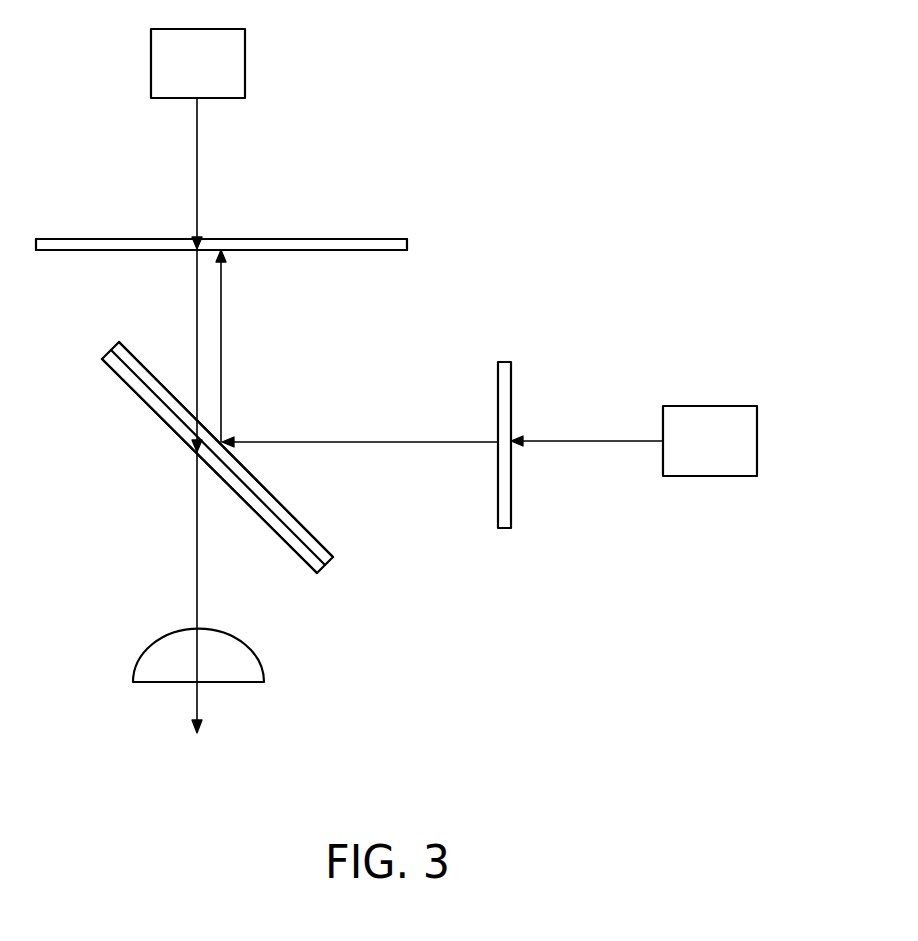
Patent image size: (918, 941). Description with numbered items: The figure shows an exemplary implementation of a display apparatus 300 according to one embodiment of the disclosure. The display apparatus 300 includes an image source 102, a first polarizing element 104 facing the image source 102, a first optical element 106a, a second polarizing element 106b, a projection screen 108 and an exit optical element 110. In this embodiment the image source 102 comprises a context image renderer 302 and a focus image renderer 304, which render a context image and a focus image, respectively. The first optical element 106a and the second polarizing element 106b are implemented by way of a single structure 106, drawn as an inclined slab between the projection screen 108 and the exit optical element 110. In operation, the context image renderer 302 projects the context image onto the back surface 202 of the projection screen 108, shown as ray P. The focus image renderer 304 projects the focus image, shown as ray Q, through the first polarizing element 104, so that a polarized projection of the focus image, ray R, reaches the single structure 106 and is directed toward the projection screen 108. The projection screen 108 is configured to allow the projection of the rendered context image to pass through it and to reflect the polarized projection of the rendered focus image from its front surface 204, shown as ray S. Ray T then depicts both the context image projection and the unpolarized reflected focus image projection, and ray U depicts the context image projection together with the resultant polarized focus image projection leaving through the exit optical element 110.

The display apparatus 300 is at (638, 143).
The image source 102 is at (757, 293).
The context image renderer 302 is at (144, 62).
The projection screen 108 is at (214, 207).
The back surface 202 is at (224, 211).
The front surface 204 is at (230, 278).
The single structure 106 is at (100, 339).
The first optical element 106a is at (286, 482).
The second polarizing element 106b is at (250, 506).
The exit optical element 110 is at (150, 646).
The first polarizing element 104 is at (535, 404).
The focus image renderer 304 is at (713, 397).